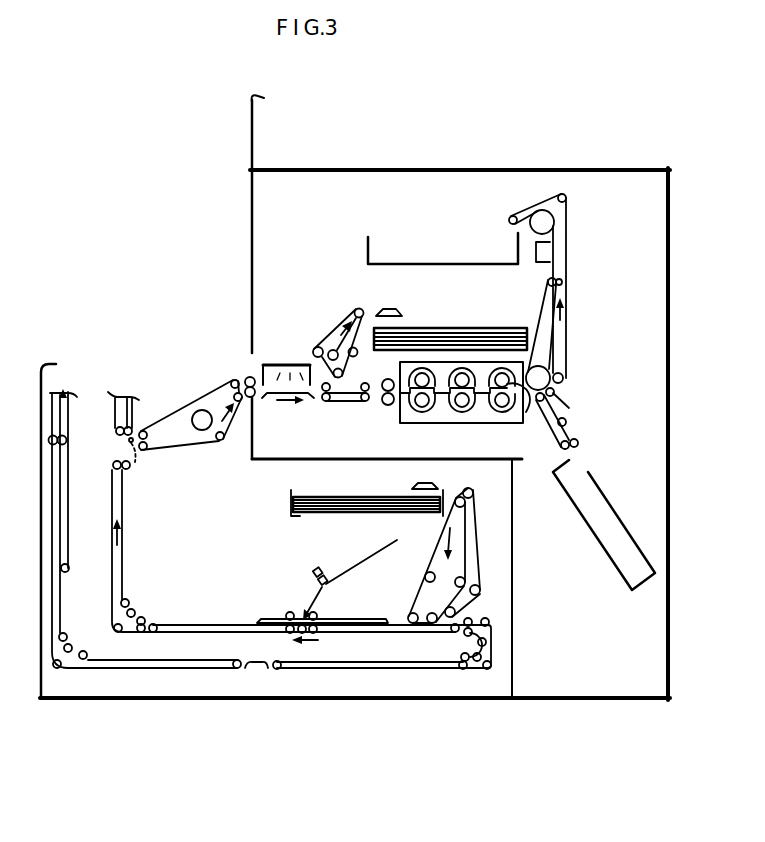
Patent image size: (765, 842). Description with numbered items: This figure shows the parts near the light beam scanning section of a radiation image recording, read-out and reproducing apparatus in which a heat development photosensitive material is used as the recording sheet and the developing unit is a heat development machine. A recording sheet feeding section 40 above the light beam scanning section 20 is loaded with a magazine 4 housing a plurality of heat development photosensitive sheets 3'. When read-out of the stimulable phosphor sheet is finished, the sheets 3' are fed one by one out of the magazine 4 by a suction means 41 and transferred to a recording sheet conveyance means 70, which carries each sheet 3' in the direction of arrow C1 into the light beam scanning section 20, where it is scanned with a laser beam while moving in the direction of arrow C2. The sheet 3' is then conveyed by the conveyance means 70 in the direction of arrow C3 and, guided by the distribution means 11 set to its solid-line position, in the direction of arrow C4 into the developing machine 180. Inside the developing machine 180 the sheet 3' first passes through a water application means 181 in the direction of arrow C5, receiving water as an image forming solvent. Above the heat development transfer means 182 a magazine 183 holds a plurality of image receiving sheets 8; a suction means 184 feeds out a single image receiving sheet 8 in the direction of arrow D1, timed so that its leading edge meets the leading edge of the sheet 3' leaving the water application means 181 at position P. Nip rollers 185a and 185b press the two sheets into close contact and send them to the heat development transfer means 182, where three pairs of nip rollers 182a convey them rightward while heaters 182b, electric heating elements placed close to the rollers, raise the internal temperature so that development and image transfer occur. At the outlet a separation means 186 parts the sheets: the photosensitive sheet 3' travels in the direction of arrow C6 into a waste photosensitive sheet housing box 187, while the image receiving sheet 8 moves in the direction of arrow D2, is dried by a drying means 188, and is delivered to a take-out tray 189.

The developing machine 180 is at (427, 168).
The take-out tray 189 is at (412, 264).
The drying means 188 is at (551, 262).
The arrow D2 is at (570, 316).
The magazine 183 is at (528, 330).
The separation means 186 is at (552, 395).
The arrow C6 is at (573, 437).
The waste photosensitive sheet housing box 187 is at (600, 543).
The suction means 184 is at (398, 308).
The image receiving sheet 8 is at (448, 328).
The heaters 182b is at (498, 398).
The nip rollers 182a is at (513, 402).
The heat development transfer means 182 is at (386, 417).
The nip roller 185a is at (384, 378).
The nip roller 185b is at (392, 410).
The position P is at (376, 402).
The arrow D1 is at (347, 337).
The water application means 181 is at (284, 364).
The arrow C5 is at (277, 403).
The recording sheet conveyance means 70 is at (176, 414).
The arrow C4 is at (228, 437).
The arrow C1 is at (445, 535).
The distribution means 11 is at (129, 441).
The arrow C3 is at (123, 541).
The arrow C2 is at (312, 641).
The light beam scanning section 20 is at (283, 581).
The recording sheet feeding section 40 is at (305, 483).
The magazine 4 is at (290, 500).
The heat development photosensitive sheet 3' is at (368, 491).
The suction means 41 is at (454, 478).